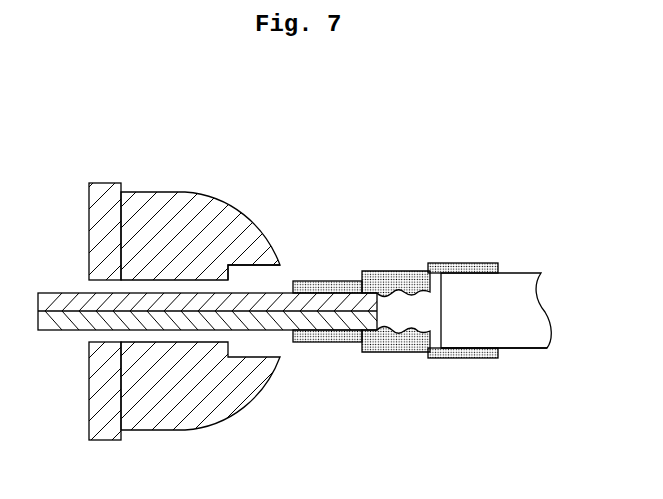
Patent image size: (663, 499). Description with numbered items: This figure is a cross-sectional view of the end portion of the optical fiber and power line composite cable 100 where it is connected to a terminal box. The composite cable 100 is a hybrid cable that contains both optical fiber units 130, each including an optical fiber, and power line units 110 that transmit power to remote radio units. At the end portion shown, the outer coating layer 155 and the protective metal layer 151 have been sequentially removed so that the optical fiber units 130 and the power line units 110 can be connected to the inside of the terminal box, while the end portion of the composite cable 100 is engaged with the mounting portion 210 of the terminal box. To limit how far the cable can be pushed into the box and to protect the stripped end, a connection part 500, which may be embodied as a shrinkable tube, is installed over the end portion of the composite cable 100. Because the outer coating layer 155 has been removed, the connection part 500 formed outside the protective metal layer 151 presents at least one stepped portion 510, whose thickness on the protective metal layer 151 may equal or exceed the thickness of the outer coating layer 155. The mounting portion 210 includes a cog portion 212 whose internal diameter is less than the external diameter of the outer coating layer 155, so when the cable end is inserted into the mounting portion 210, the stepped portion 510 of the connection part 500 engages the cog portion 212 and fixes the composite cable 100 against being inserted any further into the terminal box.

The optical fiber and power line composite cable 100 is at (490, 246).
The power line unit 110 is at (285, 344).
The optical fiber unit 130 is at (287, 280).
The protective metal layer 151 is at (422, 263).
The outer coating layer 155 is at (521, 349).
The mounting portion 210 is at (177, 198).
The cog portion 212 is at (209, 268).
The connection part 500 is at (398, 353).
The stepped portion 510 is at (362, 272).